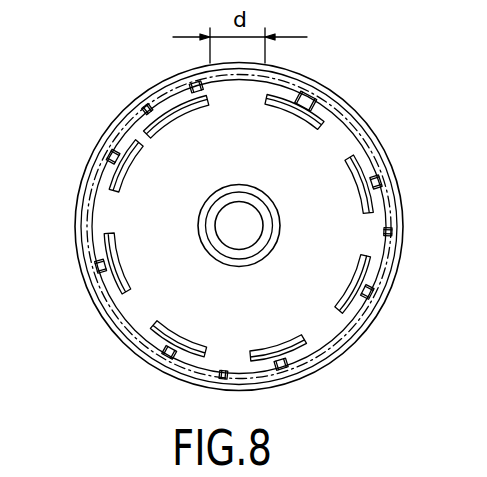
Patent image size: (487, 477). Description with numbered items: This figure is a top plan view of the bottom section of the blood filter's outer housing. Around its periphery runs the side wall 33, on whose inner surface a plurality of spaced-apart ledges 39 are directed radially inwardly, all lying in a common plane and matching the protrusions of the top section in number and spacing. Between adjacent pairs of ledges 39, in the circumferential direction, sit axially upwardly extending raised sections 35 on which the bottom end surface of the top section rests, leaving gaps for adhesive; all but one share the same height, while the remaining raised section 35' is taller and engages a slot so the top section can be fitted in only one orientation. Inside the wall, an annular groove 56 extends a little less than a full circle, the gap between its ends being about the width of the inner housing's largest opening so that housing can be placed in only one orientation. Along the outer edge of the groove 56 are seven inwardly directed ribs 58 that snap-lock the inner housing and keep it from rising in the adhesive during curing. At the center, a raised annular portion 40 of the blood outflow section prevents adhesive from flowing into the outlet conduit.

The side wall 33 is at (134, 329).
The raised sections 35 is at (240, 281).
The remaining raised section 35' is at (168, 69).
The ledges 39 is at (150, 110).
The raised annular portion 40 is at (258, 255).
The annular groove 56 is at (114, 205).
The ribs 58 is at (320, 127).